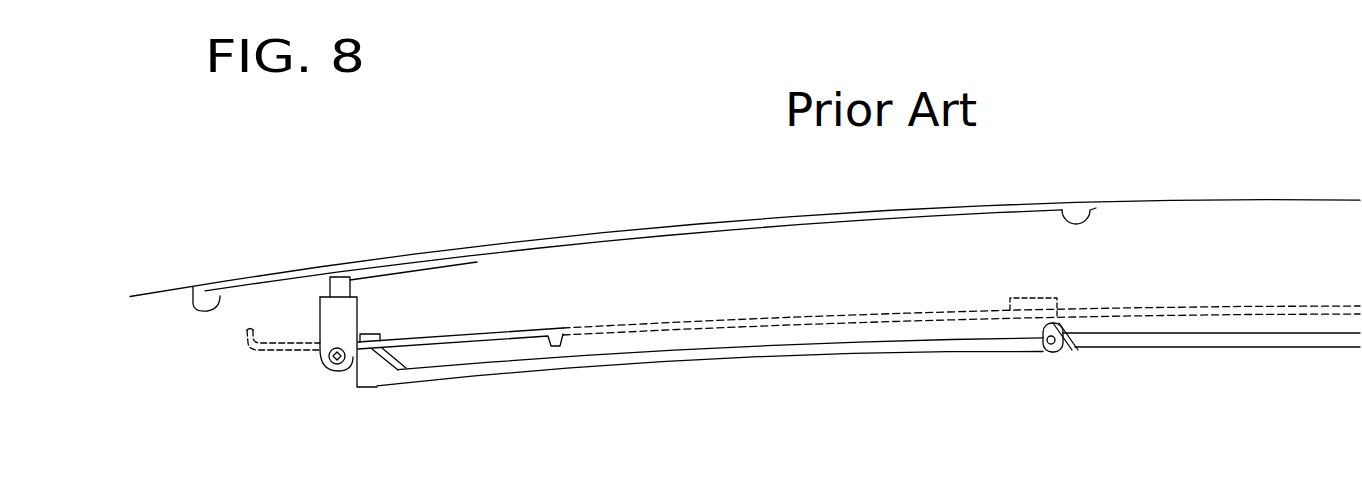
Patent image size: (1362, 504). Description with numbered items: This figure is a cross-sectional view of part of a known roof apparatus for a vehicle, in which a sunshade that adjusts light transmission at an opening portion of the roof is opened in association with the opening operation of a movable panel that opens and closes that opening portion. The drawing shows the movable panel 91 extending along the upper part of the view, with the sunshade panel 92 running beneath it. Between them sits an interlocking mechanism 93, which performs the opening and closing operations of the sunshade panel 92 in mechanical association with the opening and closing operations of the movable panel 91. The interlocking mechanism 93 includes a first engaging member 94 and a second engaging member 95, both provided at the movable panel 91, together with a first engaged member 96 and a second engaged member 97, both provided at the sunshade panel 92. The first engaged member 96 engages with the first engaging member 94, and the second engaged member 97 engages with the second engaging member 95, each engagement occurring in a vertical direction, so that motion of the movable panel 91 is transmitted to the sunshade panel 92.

The movable panel 91 is at (712, 223).
The sunshade panel 92 is at (735, 318).
The interlocking mechanism 93 is at (295, 373).
The first engaging member 94 is at (320, 308).
The second engaging member 95 is at (467, 330).
The first engaged member 96 is at (362, 333).
The second engaged member 97 is at (369, 364).